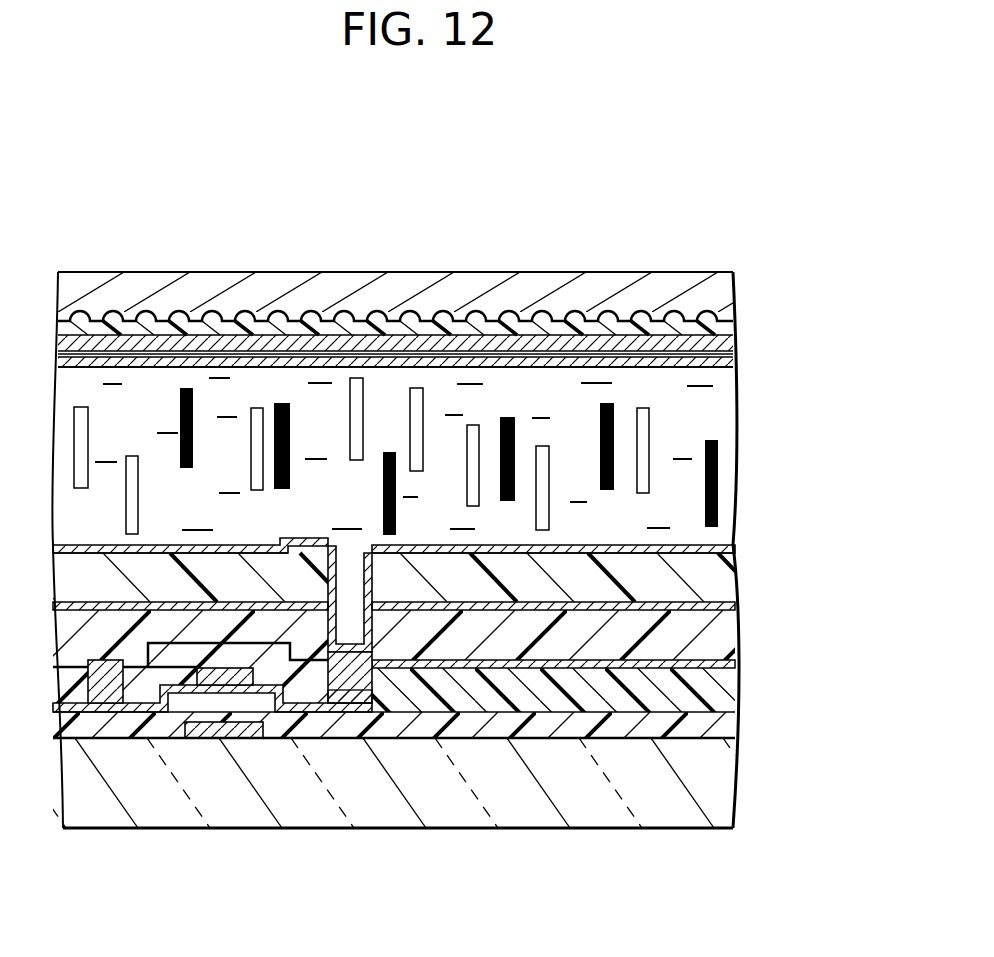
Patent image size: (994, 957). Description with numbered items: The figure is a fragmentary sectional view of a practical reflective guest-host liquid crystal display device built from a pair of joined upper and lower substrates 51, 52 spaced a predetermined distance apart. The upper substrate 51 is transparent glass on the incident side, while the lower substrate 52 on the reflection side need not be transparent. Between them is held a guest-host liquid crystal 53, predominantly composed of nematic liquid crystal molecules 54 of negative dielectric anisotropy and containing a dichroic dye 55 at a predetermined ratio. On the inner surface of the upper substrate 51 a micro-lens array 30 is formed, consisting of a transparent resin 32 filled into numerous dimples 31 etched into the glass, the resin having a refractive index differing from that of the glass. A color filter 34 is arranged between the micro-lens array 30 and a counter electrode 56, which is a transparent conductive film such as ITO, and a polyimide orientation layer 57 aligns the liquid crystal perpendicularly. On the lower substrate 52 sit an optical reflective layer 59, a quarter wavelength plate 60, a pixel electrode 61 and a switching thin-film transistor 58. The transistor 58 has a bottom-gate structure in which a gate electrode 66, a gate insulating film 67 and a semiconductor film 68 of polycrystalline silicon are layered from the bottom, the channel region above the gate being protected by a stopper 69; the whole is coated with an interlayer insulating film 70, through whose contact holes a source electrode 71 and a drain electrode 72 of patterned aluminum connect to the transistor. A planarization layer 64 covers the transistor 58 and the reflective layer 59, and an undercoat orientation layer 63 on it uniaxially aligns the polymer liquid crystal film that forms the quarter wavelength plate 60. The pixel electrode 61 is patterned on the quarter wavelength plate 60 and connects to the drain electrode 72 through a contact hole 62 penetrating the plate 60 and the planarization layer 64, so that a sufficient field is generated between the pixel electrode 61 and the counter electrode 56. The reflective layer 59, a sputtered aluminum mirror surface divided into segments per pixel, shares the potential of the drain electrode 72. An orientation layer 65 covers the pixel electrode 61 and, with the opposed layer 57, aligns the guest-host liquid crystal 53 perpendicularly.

The micro-lens array 30 is at (395, 243).
The dimples 31 is at (145, 307).
The transparent resin 32 is at (243, 323).
The color filter 34 is at (723, 347).
The upper substrate 51 is at (722, 292).
The lower substrate 52 is at (715, 795).
The guest-host liquid crystal 53 is at (715, 400).
The nematic liquid crystal molecules 54 is at (643, 437).
The dichroic dye 55 is at (713, 497).
The counter electrode 56 is at (727, 358).
The orientation layer 57 is at (727, 365).
The thin-film transistor 58 is at (192, 740).
The optical reflective layer 59 is at (705, 670).
The quarter wavelength plate 60 is at (712, 583).
The pixel electrode 61 is at (710, 557).
The contact hole 62 is at (370, 625).
The undercoat orientation layer 63 is at (720, 605).
The planarization layer 64 is at (725, 633).
The orientation layer 65 is at (723, 543).
The gate electrode 66 is at (220, 730).
The gate insulating film 67 is at (722, 728).
The semiconductor film 68 is at (358, 708).
The stopper 69 is at (243, 678).
The interlayer insulating film 70 is at (715, 697).
The source electrode 71 is at (108, 697).
The drain electrode 72 is at (363, 682).